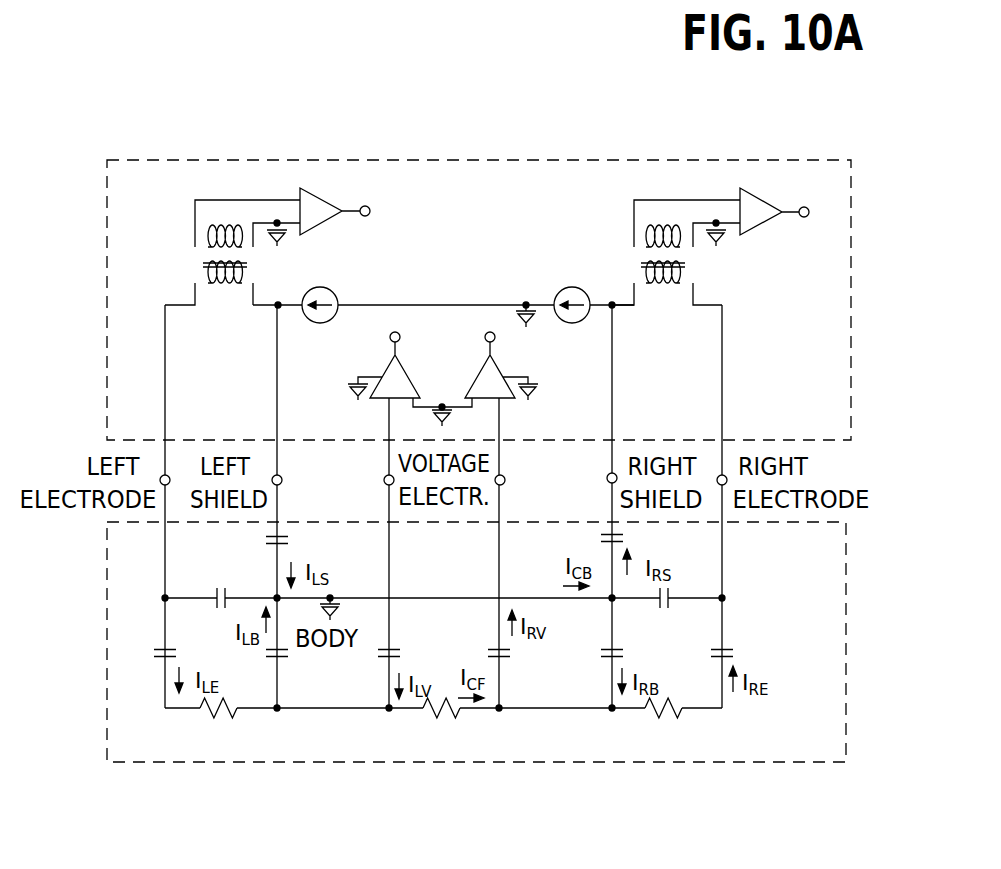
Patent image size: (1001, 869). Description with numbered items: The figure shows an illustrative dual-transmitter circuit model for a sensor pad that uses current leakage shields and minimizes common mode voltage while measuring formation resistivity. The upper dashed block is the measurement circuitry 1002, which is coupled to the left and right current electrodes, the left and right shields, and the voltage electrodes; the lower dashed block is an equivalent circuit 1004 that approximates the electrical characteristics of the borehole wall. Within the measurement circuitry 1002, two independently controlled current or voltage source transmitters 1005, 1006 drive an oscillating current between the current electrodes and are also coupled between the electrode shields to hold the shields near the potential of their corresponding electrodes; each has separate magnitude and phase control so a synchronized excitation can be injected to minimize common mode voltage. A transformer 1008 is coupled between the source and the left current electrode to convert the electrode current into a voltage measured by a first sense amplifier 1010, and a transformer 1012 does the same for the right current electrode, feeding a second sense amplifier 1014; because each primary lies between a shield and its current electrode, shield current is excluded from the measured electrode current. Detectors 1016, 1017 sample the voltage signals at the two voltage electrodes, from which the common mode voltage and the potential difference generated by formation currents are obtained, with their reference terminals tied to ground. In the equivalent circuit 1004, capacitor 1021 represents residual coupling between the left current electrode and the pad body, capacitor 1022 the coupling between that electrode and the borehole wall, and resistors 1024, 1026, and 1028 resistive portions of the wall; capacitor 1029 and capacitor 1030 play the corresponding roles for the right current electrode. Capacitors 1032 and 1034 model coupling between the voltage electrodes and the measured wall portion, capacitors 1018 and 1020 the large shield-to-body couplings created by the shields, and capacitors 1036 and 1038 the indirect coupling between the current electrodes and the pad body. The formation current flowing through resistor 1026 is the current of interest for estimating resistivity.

The measurement circuitry 1002 is at (167, 160).
The equivalent circuit 1004 is at (170, 762).
The transmitter 1005 is at (336, 297).
The transmitter 1006 is at (568, 322).
The transformer 1008 is at (232, 298).
The first sense amplifier 1010 is at (320, 228).
The transformer 1012 is at (670, 298).
The second sense amplifier 1014 is at (748, 230).
The detector 1016 is at (377, 398).
The detector 1017 is at (518, 398).
The capacitor 1018 is at (289, 539).
The capacitor 1020 is at (604, 532).
The capacitor 1021 is at (215, 592).
The capacitor 1022 is at (160, 657).
The resistor 1024 is at (213, 716).
The resistor 1026 is at (430, 716).
The resistor 1028 is at (655, 716).
The capacitor 1029 is at (671, 584).
The capacitor 1030 is at (733, 652).
The capacitor 1032 is at (396, 650).
The capacitor 1034 is at (506, 658).
The capacitor 1036 is at (288, 656).
The capacitor 1038 is at (619, 650).